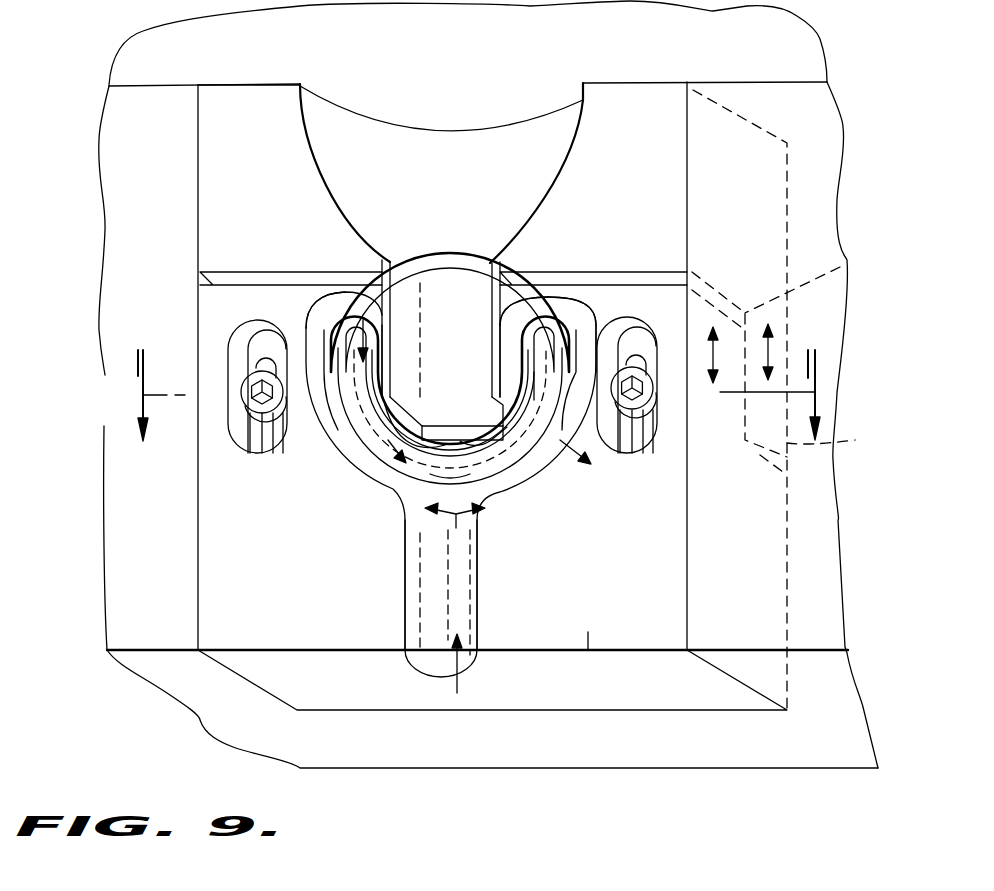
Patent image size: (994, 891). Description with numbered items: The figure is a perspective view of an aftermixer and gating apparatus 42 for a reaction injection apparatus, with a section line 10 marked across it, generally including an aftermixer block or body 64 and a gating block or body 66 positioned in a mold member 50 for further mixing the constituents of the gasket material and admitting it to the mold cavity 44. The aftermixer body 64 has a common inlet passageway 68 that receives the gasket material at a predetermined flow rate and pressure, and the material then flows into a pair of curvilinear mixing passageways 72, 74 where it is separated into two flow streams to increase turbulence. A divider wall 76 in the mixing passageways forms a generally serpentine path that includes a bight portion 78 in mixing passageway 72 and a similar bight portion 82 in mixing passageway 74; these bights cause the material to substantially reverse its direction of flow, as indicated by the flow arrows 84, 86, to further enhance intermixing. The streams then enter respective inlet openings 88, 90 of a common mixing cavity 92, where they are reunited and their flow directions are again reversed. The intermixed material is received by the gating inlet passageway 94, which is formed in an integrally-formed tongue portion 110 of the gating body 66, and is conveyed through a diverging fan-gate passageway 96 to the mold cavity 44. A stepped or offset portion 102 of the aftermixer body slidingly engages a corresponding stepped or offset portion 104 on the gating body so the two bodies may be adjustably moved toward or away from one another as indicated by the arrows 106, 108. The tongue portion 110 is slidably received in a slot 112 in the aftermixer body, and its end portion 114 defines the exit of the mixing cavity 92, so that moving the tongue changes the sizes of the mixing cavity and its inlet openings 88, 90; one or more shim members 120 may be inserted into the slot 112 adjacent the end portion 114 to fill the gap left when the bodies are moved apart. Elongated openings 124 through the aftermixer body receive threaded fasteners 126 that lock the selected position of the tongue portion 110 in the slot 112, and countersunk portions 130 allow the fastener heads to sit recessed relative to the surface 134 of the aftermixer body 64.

The section line 10- 10 is at (96, 392).
The aftermixer and gating apparatus 42 is at (133, 620).
The mold cavity 44 is at (450, 55).
The mold member 50 is at (134, 551).
The aftermixer block or body 64 is at (310, 594).
The gating block or body 66 is at (270, 188).
The common inlet passageway 68 is at (423, 616).
The curvilinear mixing passageway 72 is at (372, 357).
The curvilinear mixing passageway 74 is at (514, 340).
The divider wall 76 is at (560, 455).
The bight portion 78 is at (335, 310).
The bight portion 82 is at (560, 312).
The flow arrow 84 is at (325, 337).
The flow arrow 86 is at (620, 318).
The inlet opening 88 is at (383, 407).
The inlet opening 90 is at (493, 397).
The common mixing cavity 92 is at (467, 470).
The gating inlet passageway 94 is at (463, 345).
The diverging fan-gate passageway 96 is at (470, 199).
The stepped or offset portion 102 is at (755, 304).
The stepped or offset portion 104 is at (794, 399).
The arrow 106 is at (710, 350).
The arrow 108 is at (773, 357).
The tongue portion 110 is at (500, 305).
The slot 112 is at (440, 288).
The end portion 114 is at (517, 447).
The shim member 120 is at (440, 430).
The elongated opening 124 is at (272, 443).
The threaded fastener 126 is at (247, 403).
The countersunk portion 130 is at (243, 340).
The surface 134 is at (580, 628).